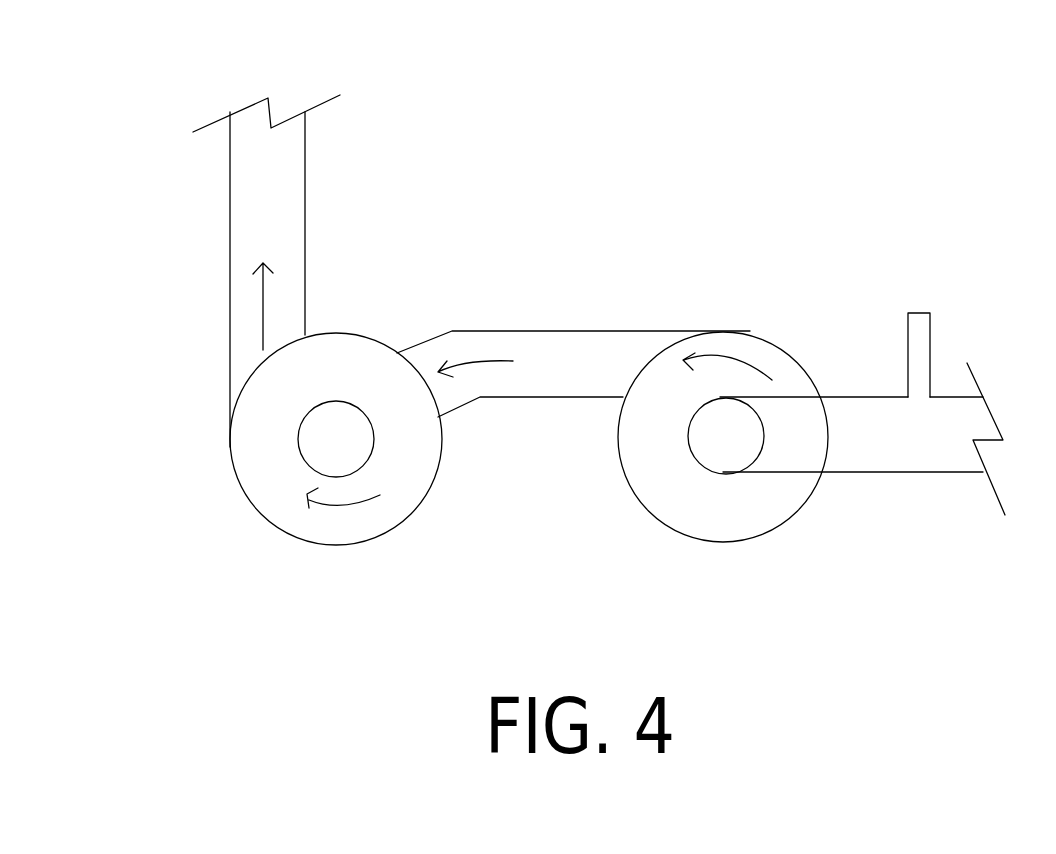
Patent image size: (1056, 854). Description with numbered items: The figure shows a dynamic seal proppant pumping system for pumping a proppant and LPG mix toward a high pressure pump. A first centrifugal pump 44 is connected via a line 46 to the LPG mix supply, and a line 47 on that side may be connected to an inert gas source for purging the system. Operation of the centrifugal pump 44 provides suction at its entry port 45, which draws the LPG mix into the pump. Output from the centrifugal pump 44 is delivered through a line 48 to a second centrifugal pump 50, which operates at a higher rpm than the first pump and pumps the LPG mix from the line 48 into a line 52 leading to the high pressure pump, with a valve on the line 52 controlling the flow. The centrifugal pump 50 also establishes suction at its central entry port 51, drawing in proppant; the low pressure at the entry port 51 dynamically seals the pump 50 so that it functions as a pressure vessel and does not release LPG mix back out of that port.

The centrifugal pump 44 is at (748, 332).
The entry port 45 is at (725, 467).
The line 46 is at (917, 472).
The line 47 is at (930, 342).
The line 48 is at (518, 331).
The centrifugal pump 50 is at (337, 548).
The central entry port 51 is at (297, 437).
The line 52 is at (305, 173).